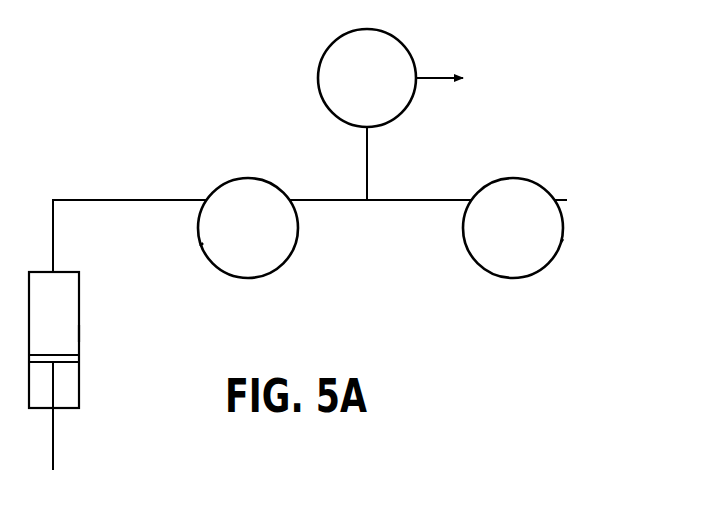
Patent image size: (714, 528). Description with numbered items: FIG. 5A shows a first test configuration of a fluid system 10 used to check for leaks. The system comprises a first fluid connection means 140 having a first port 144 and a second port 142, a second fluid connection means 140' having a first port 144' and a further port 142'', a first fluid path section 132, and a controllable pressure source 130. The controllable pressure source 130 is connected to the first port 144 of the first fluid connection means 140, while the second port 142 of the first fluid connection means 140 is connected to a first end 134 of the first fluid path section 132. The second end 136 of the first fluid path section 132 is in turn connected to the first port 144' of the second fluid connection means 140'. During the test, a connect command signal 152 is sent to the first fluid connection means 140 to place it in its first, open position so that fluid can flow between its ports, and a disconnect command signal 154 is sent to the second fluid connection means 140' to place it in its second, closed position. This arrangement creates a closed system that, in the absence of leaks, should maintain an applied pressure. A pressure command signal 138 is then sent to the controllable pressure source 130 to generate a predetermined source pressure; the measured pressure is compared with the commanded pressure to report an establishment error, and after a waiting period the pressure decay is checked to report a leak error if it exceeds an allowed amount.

The apparatus 10 is at (410, 50).
The controllable pressure source 130 is at (69, 331).
The first fluid path section 132 is at (381, 202).
The first end 134 is at (300, 203).
The second end 136 is at (463, 203).
The pressure command signal 138 is at (80, 334).
The first fluid connection means 140 is at (248, 228).
The second fluid connection means 140' is at (513, 228).
The second port 142 is at (380, 186).
The conduit segment 142'' is at (585, 185).
The first port 144 is at (130, 220).
The first port 144' is at (467, 172).
The connect command signal 152 is at (203, 245).
The valve inlet 154 is at (563, 240).